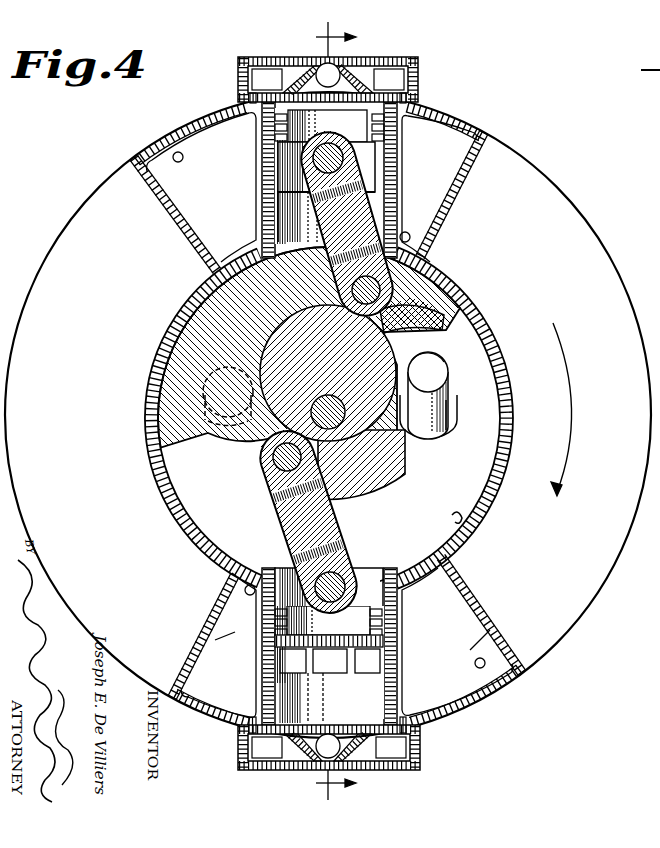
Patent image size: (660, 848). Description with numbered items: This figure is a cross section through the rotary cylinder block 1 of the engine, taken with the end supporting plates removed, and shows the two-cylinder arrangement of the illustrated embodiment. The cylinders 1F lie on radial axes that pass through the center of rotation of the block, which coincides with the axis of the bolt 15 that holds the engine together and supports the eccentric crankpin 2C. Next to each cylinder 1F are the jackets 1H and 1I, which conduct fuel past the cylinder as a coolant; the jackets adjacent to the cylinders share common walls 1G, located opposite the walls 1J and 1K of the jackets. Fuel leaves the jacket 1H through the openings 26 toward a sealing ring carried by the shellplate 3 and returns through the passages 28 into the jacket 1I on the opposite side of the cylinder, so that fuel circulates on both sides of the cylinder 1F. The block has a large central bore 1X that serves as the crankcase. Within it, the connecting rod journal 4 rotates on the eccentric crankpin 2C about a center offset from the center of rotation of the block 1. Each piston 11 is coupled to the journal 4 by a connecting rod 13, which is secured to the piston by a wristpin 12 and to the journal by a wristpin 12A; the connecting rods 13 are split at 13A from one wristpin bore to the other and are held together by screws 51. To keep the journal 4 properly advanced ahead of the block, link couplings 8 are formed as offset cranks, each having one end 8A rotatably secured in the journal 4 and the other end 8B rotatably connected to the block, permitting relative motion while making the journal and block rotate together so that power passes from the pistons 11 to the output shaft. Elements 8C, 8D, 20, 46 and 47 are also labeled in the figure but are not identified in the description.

The rotary cylinder block 1 is at (560, 200).
The cylinder 1F is at (280, 222).
The common wall 1G is at (393, 167).
The jacket 1H is at (470, 632).
The jacket 1I is at (225, 641).
The jacket wall 1J is at (464, 594).
The jacket wall 1K is at (218, 606).
The central bore 1X is at (459, 521).
The eccentric crankpin 2C is at (380, 322).
The shellplate 3 is at (328, 411).
The connecting rod journal 4 is at (216, 334).
The link coupling 8 is at (203, 394).
The end of link coupling 8A is at (430, 373).
The other end of link coupling 8B is at (447, 412).
The pin head 8C is at (441, 362).
The socket 8D is at (446, 432).
The piston 11 is at (372, 120).
The wristpin 12 is at (345, 160).
The wristpin 12A is at (382, 288).
The connecting rod 13 is at (322, 222).
The split 13A is at (378, 214).
The bolt 15 is at (328, 430).
The cylinder head 20 is at (366, 58).
The opening 26 is at (184, 157).
The passage 28 is at (411, 238).
The bolt 46 is at (250, 95).
The bolt 47 is at (252, 717).
The screw 51 is at (280, 193).